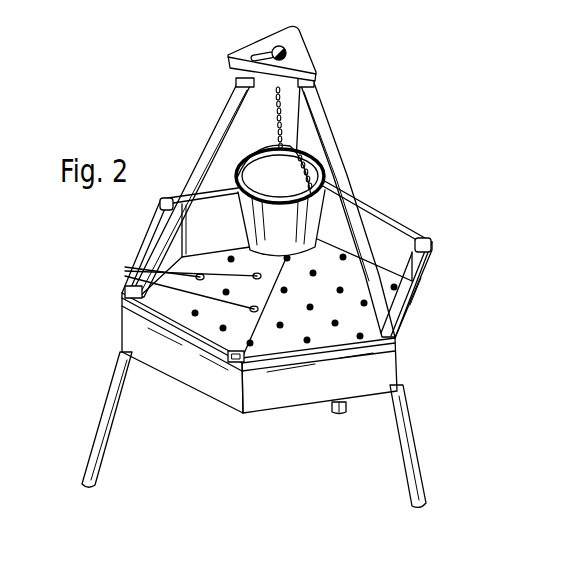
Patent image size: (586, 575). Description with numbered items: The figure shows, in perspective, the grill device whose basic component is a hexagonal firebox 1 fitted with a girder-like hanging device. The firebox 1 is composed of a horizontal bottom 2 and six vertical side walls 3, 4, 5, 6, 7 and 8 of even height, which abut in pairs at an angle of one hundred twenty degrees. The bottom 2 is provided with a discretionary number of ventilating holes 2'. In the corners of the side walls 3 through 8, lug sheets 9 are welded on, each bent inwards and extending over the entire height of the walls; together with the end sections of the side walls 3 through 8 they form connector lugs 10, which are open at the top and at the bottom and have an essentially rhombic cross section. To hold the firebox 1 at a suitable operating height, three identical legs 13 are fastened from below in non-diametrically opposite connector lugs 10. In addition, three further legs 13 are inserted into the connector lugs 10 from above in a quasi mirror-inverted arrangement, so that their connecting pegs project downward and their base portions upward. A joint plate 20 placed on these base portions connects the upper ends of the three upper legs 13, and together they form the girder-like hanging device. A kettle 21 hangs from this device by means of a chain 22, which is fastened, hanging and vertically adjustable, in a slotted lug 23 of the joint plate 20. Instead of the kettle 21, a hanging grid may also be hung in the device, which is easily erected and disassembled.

The hexagonal firebox 1 is at (373, 198).
The bottom 2 is at (367, 229).
The ventilating holes 2' is at (177, 283).
The side wall 3 is at (423, 308).
The side wall 4 is at (290, 400).
The side wall 5 is at (158, 356).
The side wall 6 is at (152, 232).
The side wall 7 is at (230, 225).
The side wall 8 is at (357, 197).
The lug sheets 9 is at (183, 240).
The connector lugs 10 is at (162, 203).
The legs 13 is at (100, 432).
The joint plate 20 is at (302, 57).
The kettle 21 is at (243, 173).
The chain 22 is at (270, 110).
The slotted lug 23 is at (256, 50).